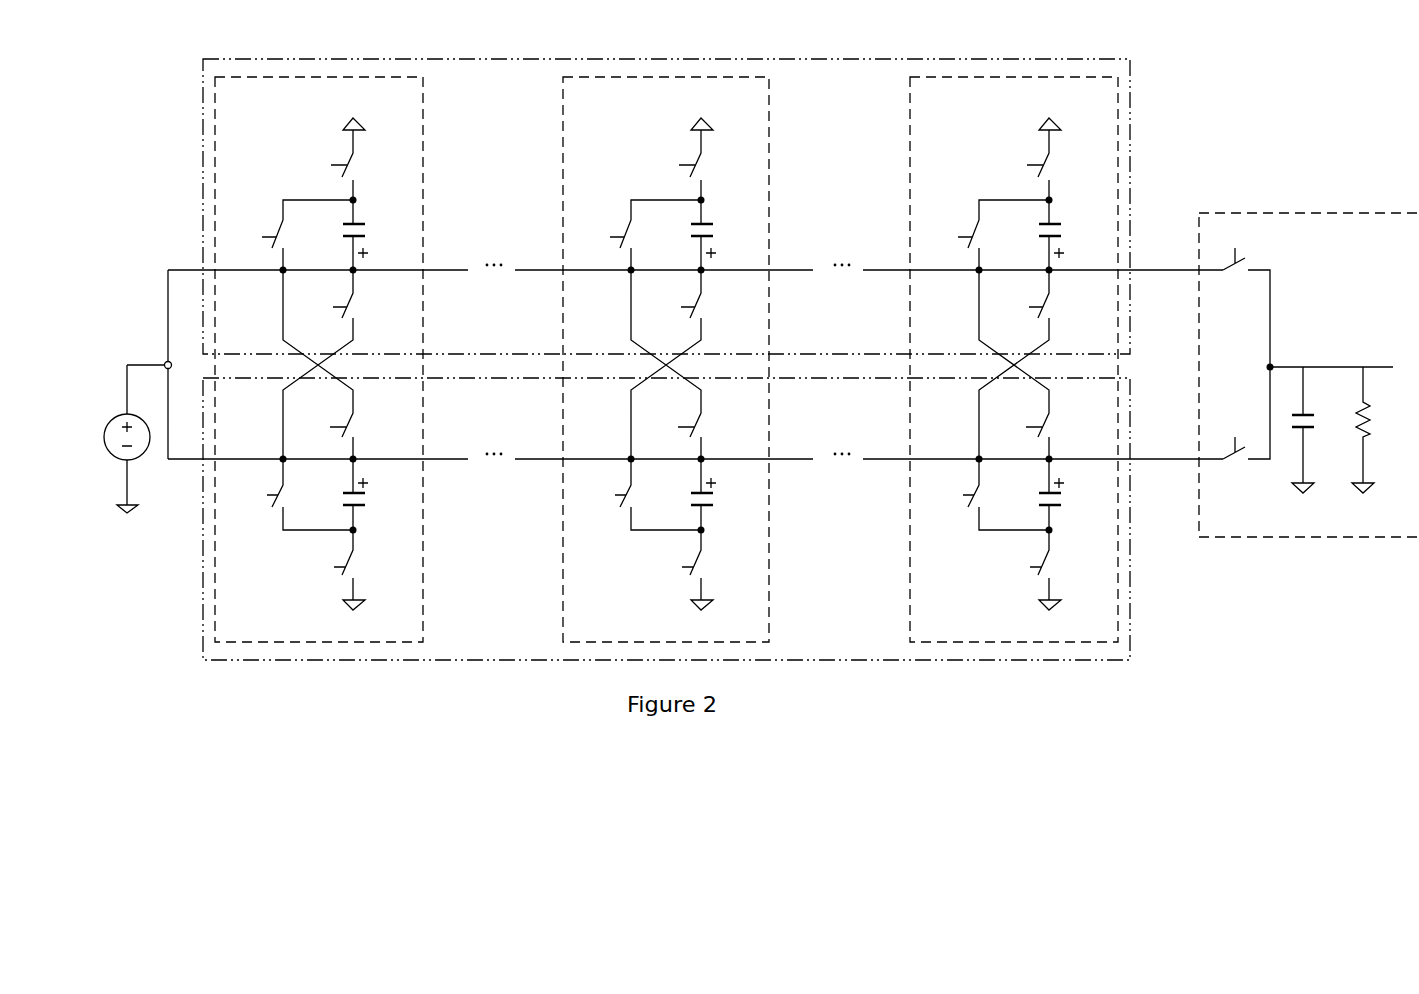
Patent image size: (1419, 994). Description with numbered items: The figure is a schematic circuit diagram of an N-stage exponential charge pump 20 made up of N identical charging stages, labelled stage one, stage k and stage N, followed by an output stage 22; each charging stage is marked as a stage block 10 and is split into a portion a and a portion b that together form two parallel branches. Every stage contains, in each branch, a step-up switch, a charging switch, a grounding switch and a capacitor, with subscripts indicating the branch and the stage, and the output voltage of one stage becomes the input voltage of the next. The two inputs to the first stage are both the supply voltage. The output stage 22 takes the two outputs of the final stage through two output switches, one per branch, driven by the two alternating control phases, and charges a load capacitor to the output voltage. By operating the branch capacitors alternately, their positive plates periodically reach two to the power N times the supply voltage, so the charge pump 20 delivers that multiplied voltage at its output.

The charge pump 20 is at (200, 73).
The charge pump stage 10 is at (245, 128).
The output stage 22 is at (1403, 252).